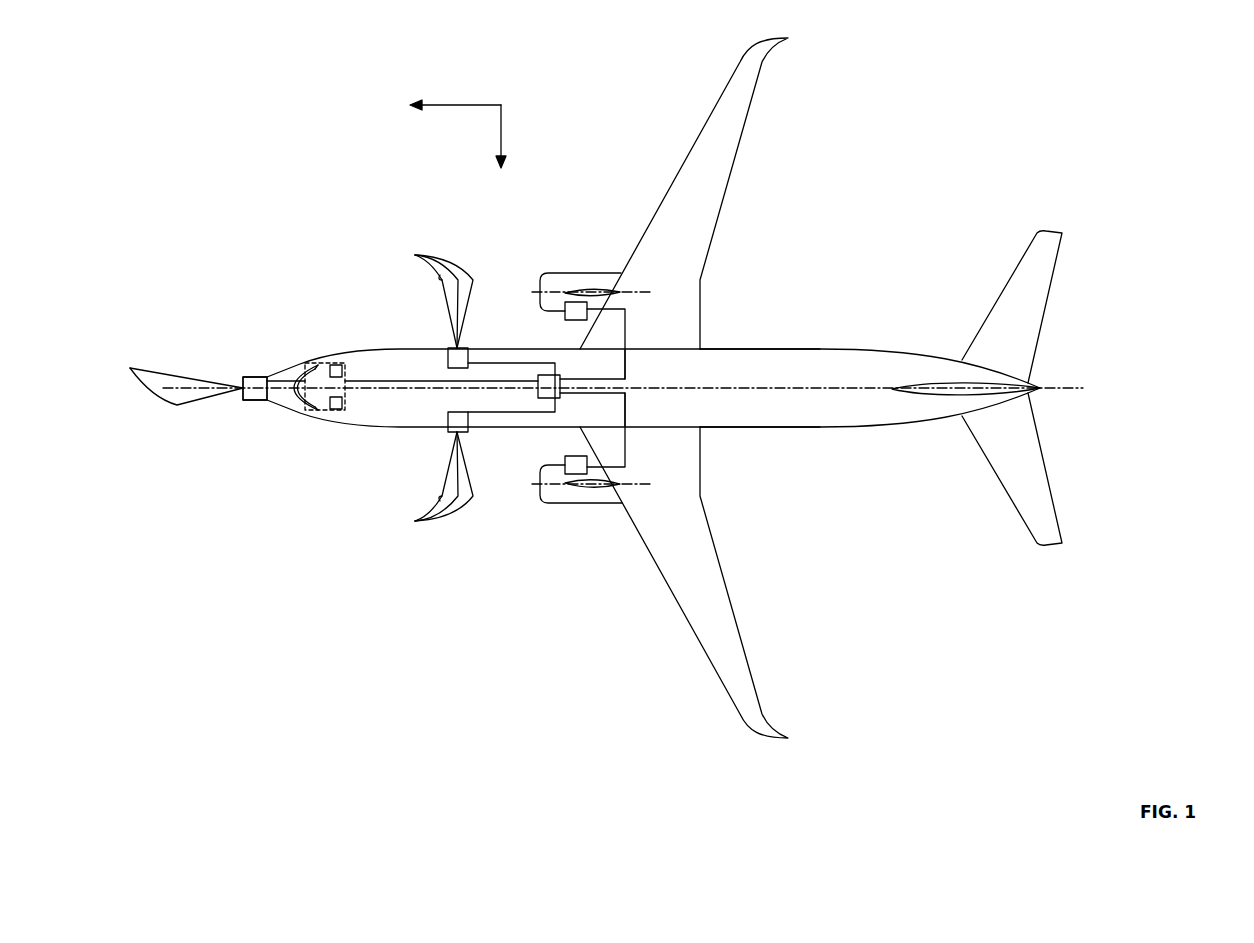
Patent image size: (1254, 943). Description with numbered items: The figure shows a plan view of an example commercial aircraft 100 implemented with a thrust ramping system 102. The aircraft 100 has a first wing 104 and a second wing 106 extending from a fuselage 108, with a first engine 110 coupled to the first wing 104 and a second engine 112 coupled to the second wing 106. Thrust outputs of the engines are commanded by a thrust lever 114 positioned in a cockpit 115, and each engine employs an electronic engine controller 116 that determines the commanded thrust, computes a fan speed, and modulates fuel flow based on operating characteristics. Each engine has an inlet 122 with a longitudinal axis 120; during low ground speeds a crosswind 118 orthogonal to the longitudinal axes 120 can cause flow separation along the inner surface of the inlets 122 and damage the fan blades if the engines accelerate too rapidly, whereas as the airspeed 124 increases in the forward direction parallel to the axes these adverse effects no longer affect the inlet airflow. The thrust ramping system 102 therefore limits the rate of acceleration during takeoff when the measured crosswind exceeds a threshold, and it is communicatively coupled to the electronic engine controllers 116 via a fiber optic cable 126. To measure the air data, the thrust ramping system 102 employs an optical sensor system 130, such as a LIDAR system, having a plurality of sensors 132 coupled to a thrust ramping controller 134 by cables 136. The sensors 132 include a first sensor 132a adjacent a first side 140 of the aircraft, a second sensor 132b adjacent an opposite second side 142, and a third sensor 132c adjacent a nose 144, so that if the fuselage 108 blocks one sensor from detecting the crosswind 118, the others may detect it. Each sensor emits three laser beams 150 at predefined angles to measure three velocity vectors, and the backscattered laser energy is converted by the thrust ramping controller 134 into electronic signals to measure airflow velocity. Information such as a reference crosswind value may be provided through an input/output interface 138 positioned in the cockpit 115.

The aircraft 100 is at (316, 121).
The thrust ramping system 102 is at (498, 536).
The first wing 104 is at (703, 125).
The second wing 106 is at (737, 625).
The fuselage 108 is at (810, 345).
The first engine 110 is at (543, 275).
The second engine 112 is at (613, 503).
The thrust lever 114 is at (334, 364).
The cockpit 115 is at (342, 362).
The electronic engine controller 116 is at (577, 319).
The crosswind 118 is at (502, 140).
The longitudinal axis 120 is at (617, 293).
The inlet 122 is at (540, 280).
The airspeed 124 is at (438, 104).
The fiber optic cable 126 is at (627, 353).
The optical sensor system 130 is at (358, 472).
The sensors 132 is at (313, 381).
The first sensor 132a is at (448, 349).
The second sensor 132b is at (448, 418).
The third sensor 132c is at (243, 377).
The thrust ramping controller 134 is at (552, 386).
The cable 136 is at (510, 364).
The input/output interface 138 is at (334, 410).
The first side 140 is at (703, 349).
The second side 142 is at (703, 427).
The nose 144 is at (248, 401).
The laser beams 150 is at (293, 388).